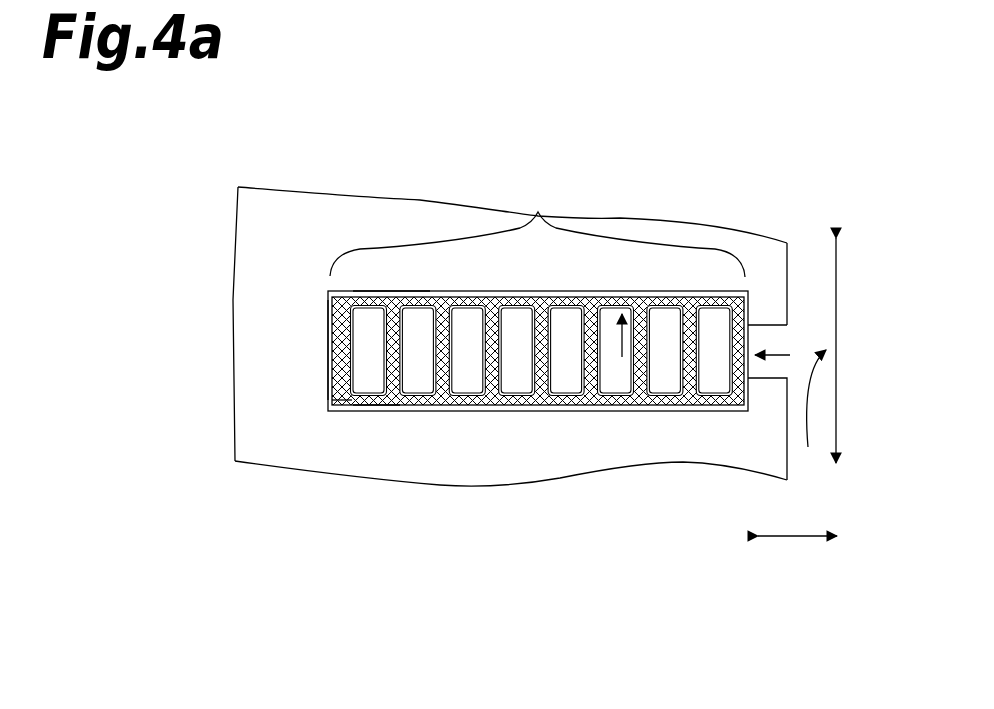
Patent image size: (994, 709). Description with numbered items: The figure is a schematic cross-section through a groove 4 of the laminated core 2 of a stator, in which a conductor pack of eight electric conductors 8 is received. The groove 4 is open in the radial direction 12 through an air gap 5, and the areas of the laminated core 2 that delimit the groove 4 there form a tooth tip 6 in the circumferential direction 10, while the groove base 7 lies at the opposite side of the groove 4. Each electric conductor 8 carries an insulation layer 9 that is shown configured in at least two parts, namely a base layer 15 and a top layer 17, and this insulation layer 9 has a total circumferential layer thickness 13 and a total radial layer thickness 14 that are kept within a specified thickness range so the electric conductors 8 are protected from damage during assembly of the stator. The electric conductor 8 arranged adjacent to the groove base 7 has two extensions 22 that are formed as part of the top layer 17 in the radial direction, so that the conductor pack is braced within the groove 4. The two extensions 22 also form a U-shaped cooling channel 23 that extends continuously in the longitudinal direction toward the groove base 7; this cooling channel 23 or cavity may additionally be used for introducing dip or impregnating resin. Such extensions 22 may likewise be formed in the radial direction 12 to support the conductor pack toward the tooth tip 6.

The laminated core 2 is at (568, 460).
The groove 4 is at (538, 210).
The air gap 5 is at (769, 318).
The tooth tip 6 is at (776, 292).
The groove base 7 is at (327, 316).
The electric conductor 8 is at (470, 386).
The insulation layer 9 is at (386, 284).
The circumferential direction 10 is at (818, 361).
The radial direction 12 is at (798, 540).
The total circumferential layer thickness 13 is at (628, 288).
The total radial layer thickness 14 is at (750, 347).
The base layer 15 is at (368, 400).
The top layer 17 is at (355, 405).
The extension 22 is at (330, 293).
The cooling channel 23 is at (322, 353).